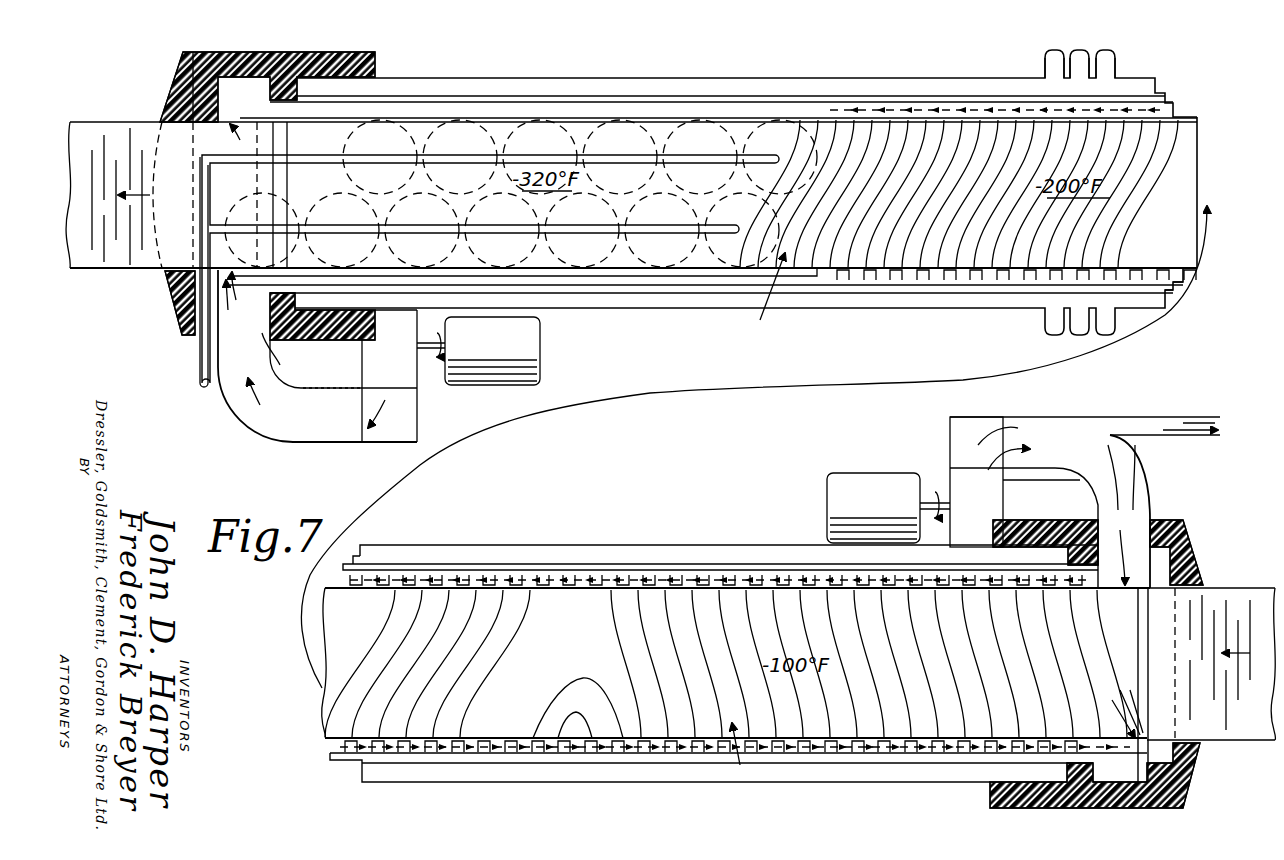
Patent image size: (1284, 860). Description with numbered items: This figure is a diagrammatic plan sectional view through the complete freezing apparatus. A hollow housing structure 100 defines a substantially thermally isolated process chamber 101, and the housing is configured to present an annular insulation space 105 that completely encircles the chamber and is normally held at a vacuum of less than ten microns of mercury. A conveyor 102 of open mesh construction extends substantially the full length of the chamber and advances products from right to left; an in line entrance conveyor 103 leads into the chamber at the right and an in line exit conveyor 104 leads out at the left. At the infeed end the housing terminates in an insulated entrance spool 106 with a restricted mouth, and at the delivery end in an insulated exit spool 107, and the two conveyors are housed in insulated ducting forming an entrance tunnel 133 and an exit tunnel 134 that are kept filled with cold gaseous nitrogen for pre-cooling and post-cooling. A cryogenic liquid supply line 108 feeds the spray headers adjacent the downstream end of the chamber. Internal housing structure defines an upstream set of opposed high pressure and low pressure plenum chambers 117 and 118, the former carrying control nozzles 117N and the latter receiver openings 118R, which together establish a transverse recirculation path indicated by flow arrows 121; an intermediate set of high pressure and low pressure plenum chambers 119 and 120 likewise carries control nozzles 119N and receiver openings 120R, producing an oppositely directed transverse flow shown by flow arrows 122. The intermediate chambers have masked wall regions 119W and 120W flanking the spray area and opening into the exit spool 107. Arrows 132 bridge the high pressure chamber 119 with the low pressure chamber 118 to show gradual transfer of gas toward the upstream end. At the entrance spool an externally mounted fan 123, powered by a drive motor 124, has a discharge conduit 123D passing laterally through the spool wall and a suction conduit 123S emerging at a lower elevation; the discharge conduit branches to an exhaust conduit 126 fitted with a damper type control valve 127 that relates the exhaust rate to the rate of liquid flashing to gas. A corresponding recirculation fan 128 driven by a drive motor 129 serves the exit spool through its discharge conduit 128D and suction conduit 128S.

The hollow housing structure 100 is at (747, 72).
The process chamber 101 is at (735, 820).
The conveyor 102 is at (1197, 178).
The entrance conveyor 103 is at (1223, 750).
The exit conveyor 104 is at (122, 247).
The annular insulation space 105 is at (530, 88).
The entrance spool 106 is at (1160, 530).
The exit spool 107 is at (180, 328).
The cryogenic liquid supply line 108 is at (210, 380).
The high pressure plenum chamber 117 is at (743, 575).
The control nozzles 117N is at (672, 575).
The low pressure plenum chamber 118 is at (947, 753).
The receiver openings 118R is at (830, 745).
The high pressure plenum chamber 119 is at (975, 287).
The control nozzles 119N is at (910, 280).
The masked wall region 119W is at (620, 270).
The low pressure plenum chamber 120 is at (987, 104).
The receiver openings 120R is at (925, 117).
The masked wall region 120W is at (648, 117).
The flow arrows 121 is at (660, 710).
The flow arrows 122 is at (1003, 265).
The fan 123 is at (985, 508).
The discharge conduit 123D is at (1010, 420).
The suction conduit 123S is at (1033, 448).
The drive motor 124 is at (885, 503).
The exhaust conduit 126 is at (1188, 420).
The damper type control valve 127 is at (1150, 432).
The recirculation fan 128 is at (398, 370).
The discharge conduit 128D is at (277, 423).
The suction conduit 128S is at (302, 362).
The drive motor 129 is at (495, 349).
The arrows 132 is at (572, 702).
The entrance tunnel 133 is at (1213, 586).
The exit tunnel 134 is at (152, 122).